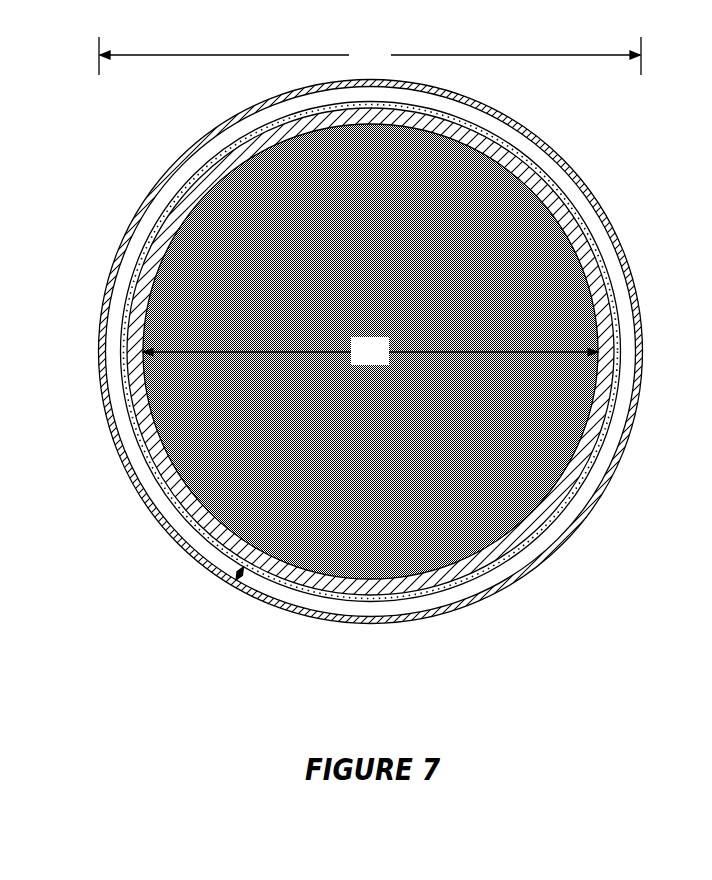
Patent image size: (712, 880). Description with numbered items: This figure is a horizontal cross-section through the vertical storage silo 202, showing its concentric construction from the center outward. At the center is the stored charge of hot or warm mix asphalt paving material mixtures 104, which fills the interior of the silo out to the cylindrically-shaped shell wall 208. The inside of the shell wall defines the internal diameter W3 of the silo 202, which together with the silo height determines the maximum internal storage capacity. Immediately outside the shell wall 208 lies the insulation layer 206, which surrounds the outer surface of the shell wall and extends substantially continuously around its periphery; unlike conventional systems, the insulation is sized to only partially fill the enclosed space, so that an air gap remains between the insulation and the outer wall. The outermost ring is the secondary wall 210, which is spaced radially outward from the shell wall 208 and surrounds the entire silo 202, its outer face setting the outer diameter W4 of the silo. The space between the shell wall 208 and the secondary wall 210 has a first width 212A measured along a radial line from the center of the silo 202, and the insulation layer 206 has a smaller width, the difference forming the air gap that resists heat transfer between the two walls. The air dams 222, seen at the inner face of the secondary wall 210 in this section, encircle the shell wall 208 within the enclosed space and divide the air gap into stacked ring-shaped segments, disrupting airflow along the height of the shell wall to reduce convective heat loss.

The vertical storage silo 202 is at (583, 176).
The secondary wall 210 is at (141, 215).
The air dams 222 is at (316, 604).
The insulation layer 206 is at (127, 361).
The shell wall 208 is at (143, 277).
The asphalt paving material mixtures 104 is at (220, 420).
The first width 212A is at (236, 573).
The internal diameter W3 is at (370, 351).
The outer diameter W4 is at (370, 56).